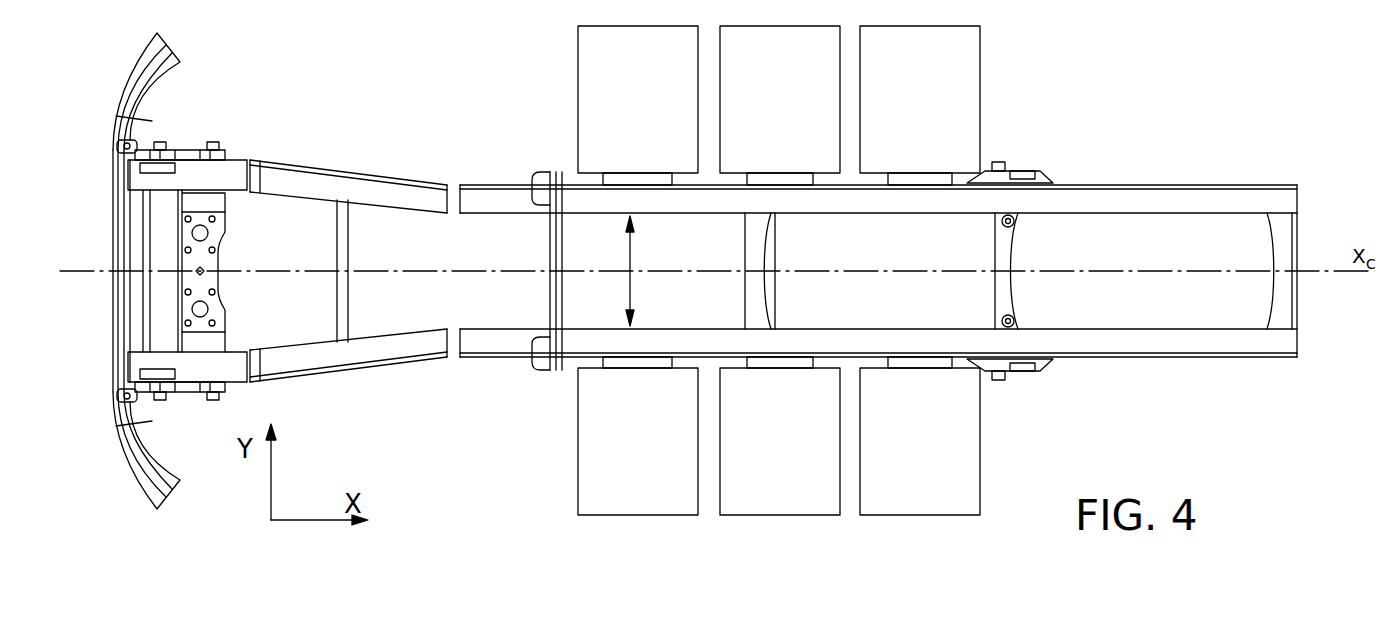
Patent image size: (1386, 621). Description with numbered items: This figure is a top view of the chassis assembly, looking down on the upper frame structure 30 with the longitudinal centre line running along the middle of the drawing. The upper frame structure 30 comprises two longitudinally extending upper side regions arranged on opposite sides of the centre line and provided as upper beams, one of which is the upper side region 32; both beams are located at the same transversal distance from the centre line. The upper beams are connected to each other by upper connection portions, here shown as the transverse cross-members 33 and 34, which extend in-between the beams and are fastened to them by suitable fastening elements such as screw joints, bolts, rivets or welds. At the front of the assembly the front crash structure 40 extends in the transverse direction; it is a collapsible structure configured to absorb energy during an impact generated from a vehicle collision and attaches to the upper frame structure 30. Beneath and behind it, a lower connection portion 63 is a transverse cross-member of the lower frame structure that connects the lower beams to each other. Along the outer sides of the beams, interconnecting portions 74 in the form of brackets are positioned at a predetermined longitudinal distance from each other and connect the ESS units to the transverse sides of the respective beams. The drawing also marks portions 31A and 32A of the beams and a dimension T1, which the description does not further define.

The front crash structure 40 is at (96, 136).
The lower connection portion 63 is at (343, 192).
The upper rail bracket 32A is at (566, 186).
The lower rail bracket 31A is at (566, 356).
The upper frame structure 30 is at (1122, 204).
The longitudinally extending upper side region 32 is at (1181, 204).
The upper connection portion 33 is at (778, 181).
The interconnecting portion 74 is at (758, 204).
The upper connection portion 34 is at (1283, 236).
The rail spacing dimension T1 is at (514, 458).